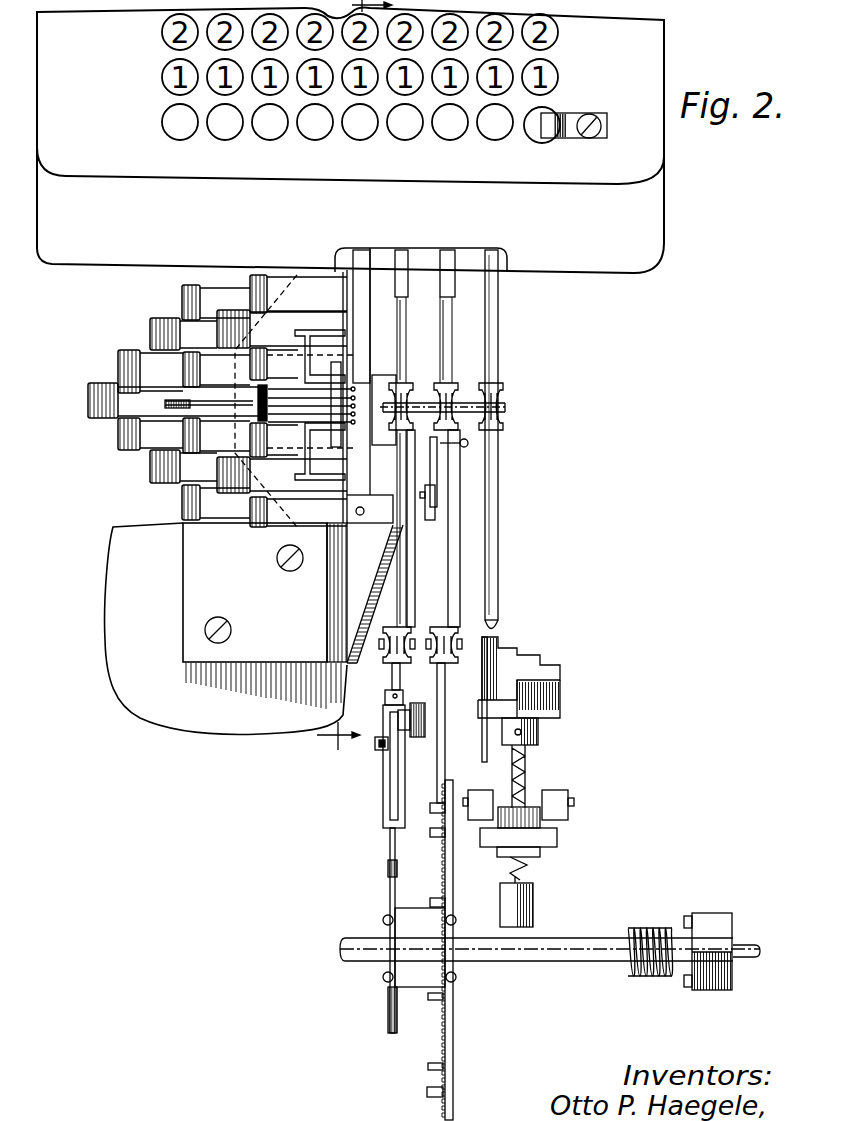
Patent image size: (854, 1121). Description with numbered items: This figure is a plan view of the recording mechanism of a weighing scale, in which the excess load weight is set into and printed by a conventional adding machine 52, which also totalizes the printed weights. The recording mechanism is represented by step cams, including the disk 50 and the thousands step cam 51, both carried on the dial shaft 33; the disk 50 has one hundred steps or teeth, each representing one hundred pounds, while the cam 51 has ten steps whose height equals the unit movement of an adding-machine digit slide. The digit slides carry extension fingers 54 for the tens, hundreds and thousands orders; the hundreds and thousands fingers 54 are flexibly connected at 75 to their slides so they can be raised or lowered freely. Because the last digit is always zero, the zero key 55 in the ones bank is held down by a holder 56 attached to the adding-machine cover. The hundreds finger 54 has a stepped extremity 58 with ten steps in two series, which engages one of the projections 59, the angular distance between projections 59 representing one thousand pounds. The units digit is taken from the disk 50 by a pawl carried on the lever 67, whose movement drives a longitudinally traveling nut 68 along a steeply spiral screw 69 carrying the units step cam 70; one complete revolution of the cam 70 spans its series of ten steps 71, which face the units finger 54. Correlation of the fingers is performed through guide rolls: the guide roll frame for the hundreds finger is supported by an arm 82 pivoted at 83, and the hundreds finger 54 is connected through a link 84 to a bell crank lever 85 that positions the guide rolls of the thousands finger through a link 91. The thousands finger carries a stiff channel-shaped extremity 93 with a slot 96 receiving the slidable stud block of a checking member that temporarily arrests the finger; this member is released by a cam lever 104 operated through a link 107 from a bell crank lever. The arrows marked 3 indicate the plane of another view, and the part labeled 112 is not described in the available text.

The section line of Fig. 3 is at (354, 384).
The dial shaft 33 is at (575, 962).
The disk 50 is at (453, 870).
The thousands step cam 51 is at (390, 985).
The adding machine 52 is at (650, 158).
The extension fingers 54 is at (487, 258).
The zero key 55 is at (555, 112).
The holder 56 is at (572, 138).
The stepped extremity 58 is at (445, 743).
The projection 59 is at (435, 1065).
The lever 67 is at (560, 797).
The traveling nut 68 is at (545, 853).
The spiral screw 69 is at (527, 770).
The units step cam 70 is at (548, 692).
The steps 71 is at (530, 650).
The flexible connection 75 is at (405, 280).
The arm 82 is at (460, 537).
The pivot 83 is at (468, 447).
The link 84 is at (430, 473).
The bell crank lever 85 is at (434, 510).
The link 91 is at (413, 593).
The channel-shaped extremity 93 is at (383, 800).
The slot 96 is at (388, 665).
The cam lever 104 is at (393, 812).
The link 107 is at (380, 745).
The slider 112 is at (355, 258).